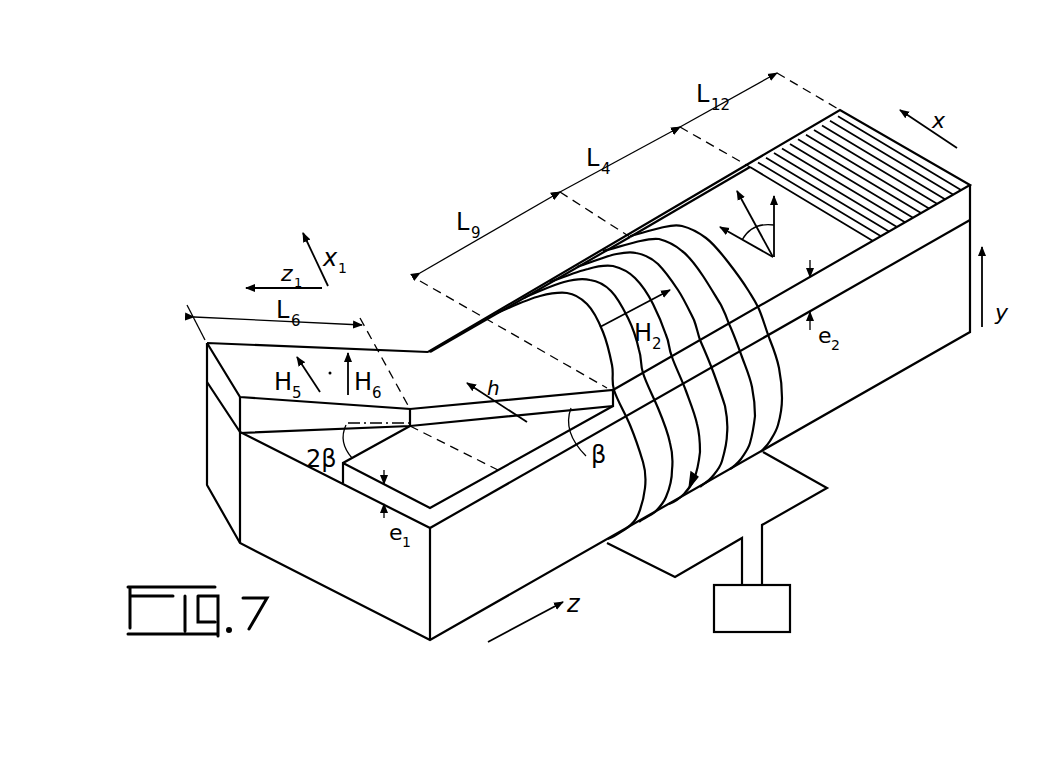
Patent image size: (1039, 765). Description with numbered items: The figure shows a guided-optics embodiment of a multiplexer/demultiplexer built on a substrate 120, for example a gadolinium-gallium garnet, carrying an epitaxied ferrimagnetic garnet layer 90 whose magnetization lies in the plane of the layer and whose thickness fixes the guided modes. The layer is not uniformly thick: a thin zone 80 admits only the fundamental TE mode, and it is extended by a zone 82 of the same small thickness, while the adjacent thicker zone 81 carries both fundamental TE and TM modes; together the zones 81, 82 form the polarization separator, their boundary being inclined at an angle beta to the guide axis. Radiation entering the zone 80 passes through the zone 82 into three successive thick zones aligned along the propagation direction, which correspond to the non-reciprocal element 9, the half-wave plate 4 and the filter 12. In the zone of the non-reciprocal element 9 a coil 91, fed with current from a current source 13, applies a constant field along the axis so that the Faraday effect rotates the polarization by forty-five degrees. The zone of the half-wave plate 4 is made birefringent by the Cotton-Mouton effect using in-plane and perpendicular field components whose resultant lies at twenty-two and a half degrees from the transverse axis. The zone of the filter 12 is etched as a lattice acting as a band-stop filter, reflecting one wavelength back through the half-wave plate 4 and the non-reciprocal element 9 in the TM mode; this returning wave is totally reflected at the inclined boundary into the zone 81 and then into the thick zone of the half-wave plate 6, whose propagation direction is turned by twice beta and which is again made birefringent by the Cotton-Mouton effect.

The half-wave plate 6 is at (207, 352).
The zone Z81 81 is at (402, 357).
The zone Z80 80 is at (457, 483).
The zone Z82 82 is at (522, 450).
The non-reciprocal element 9 is at (537, 300).
The half-wave plate 4 is at (678, 222).
The filter 12 is at (783, 158).
The coil 91 is at (776, 380).
The layer 90 is at (853, 278).
The substrate 120 is at (828, 407).
The current source 13 is at (791, 608).